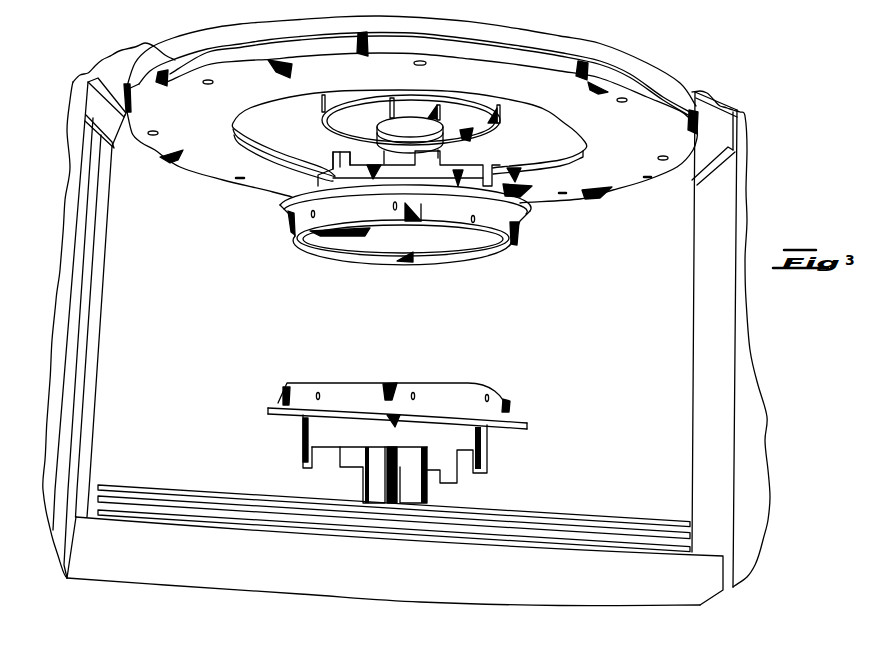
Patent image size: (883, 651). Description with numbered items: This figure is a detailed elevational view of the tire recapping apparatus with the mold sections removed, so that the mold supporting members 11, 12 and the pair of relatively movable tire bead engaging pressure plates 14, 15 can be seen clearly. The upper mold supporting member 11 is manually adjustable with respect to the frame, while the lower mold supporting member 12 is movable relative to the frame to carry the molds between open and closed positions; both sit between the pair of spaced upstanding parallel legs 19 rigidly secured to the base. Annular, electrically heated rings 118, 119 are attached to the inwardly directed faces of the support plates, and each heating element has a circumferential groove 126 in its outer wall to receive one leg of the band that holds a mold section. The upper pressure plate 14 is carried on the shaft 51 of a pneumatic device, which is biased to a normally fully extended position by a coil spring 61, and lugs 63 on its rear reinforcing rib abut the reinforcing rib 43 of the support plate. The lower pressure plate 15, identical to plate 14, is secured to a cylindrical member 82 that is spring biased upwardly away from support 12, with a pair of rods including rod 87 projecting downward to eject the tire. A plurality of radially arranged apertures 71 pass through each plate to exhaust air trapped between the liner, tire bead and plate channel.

The mold supporting member 11 is at (683, 80).
The heating ring 118 is at (139, 137).
The legs 19 is at (98, 266).
The mold supporting member 12 is at (586, 542).
The heating ring 119 is at (149, 506).
The circumferential groove 126 is at (208, 503).
The reinforcing rib 43 is at (497, 131).
The shaft 51 is at (438, 114).
The coil spring 61 is at (444, 154).
The lugs 63 is at (340, 153).
The pressure plate 14 is at (533, 216).
The apertures 71 is at (474, 219).
The pressure plate 15 is at (521, 428).
The cylindrical member 82 is at (373, 483).
The rod 87 is at (397, 477).